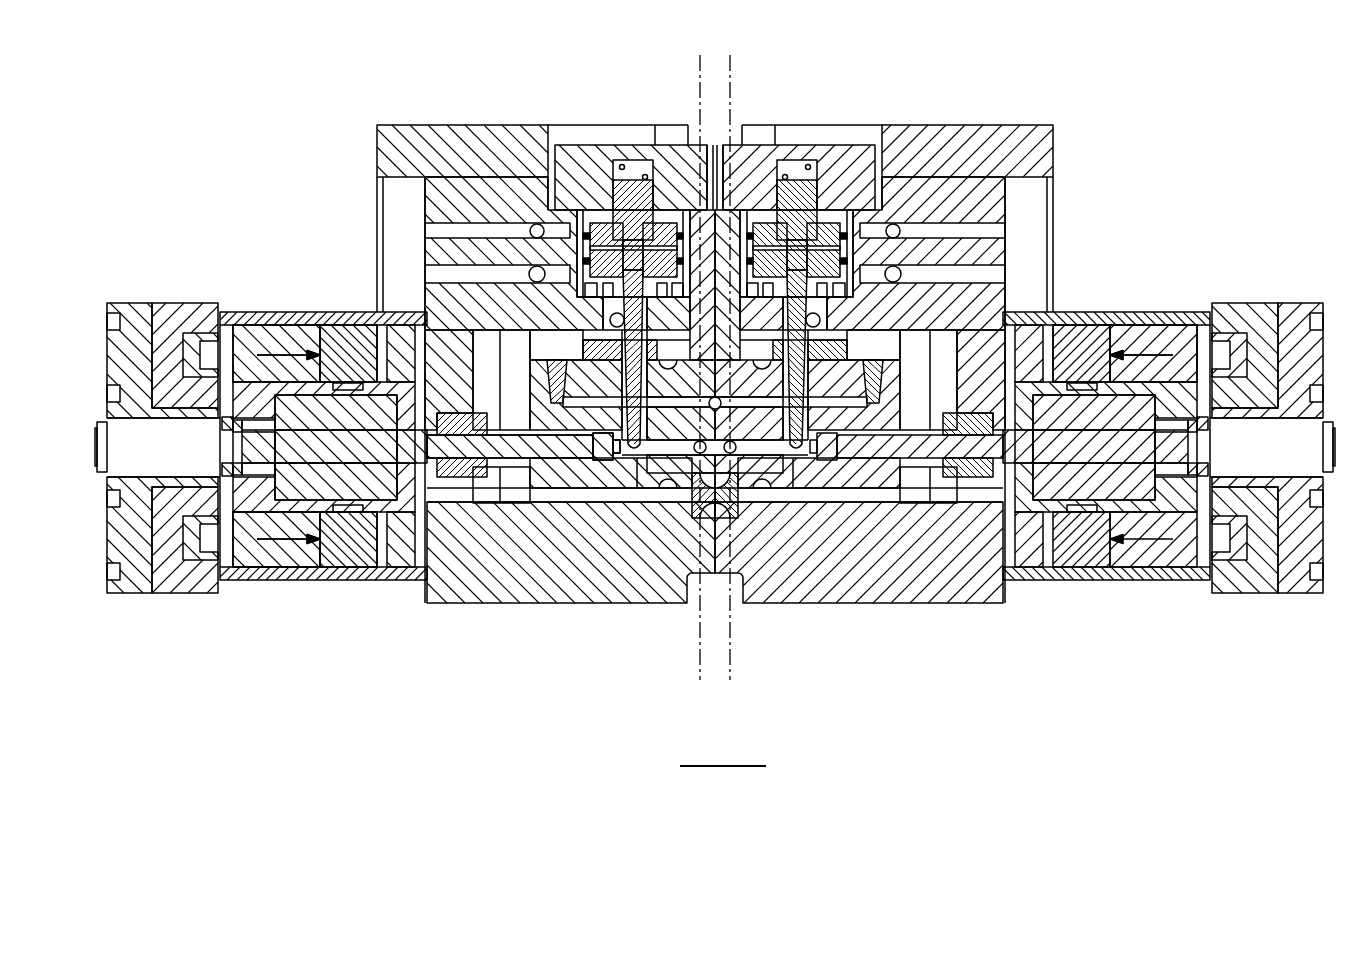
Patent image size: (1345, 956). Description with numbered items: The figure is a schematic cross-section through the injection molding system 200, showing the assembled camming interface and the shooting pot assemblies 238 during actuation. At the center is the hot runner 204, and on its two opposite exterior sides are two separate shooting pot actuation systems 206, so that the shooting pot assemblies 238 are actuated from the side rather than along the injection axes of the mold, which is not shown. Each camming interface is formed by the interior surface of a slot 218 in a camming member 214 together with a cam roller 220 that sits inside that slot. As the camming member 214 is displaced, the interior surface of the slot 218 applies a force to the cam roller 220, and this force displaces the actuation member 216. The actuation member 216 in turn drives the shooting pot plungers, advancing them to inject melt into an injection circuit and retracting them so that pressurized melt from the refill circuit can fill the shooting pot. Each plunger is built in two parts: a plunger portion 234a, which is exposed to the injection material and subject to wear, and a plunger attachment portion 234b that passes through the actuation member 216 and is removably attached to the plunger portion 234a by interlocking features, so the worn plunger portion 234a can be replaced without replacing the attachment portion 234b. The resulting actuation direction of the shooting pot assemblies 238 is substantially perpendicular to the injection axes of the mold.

The injection molding system 200 is at (245, 130).
The hot runner 204 is at (912, 603).
The shooting pot actuation system 206 is at (1332, 612).
The camming member 214 is at (1127, 413).
The actuation member 216 is at (1128, 335).
The slot 218 is at (333, 340).
The cam roller 220 is at (345, 548).
The plunger portion 234a is at (488, 450).
The plunger attachment portion 234b is at (290, 447).
The shooting pot assembly 238 is at (602, 455).